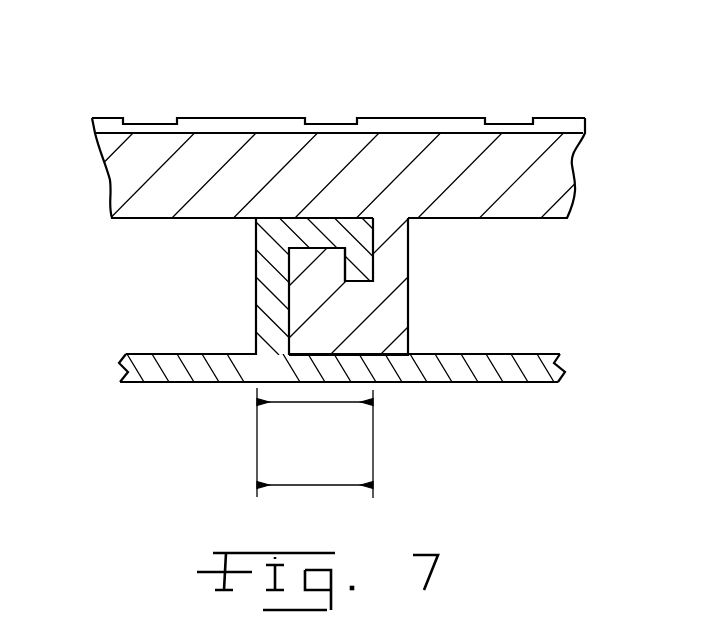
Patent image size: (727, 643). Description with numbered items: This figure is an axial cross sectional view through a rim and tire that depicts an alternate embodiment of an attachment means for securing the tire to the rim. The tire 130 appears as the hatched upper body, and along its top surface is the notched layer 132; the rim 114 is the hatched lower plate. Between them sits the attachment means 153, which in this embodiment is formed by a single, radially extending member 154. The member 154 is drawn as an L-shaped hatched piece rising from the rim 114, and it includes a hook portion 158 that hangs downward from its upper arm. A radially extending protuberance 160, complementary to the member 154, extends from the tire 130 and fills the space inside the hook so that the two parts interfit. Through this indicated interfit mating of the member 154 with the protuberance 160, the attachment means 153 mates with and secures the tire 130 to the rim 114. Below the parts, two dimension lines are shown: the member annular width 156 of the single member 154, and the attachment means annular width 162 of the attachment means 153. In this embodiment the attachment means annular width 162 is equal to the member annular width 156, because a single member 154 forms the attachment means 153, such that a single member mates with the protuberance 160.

The tire 130 is at (440, 100).
The top surface layer with notches 132 is at (238, 123).
The attachment means 153 is at (236, 248).
The radially extending member 154 is at (268, 305).
The hook portion 158 is at (363, 277).
The radially extending protuberance 160 is at (392, 327).
The rim 114 is at (123, 370).
The member annular width 156 is at (305, 403).
The attachment means annular width 162 is at (317, 487).